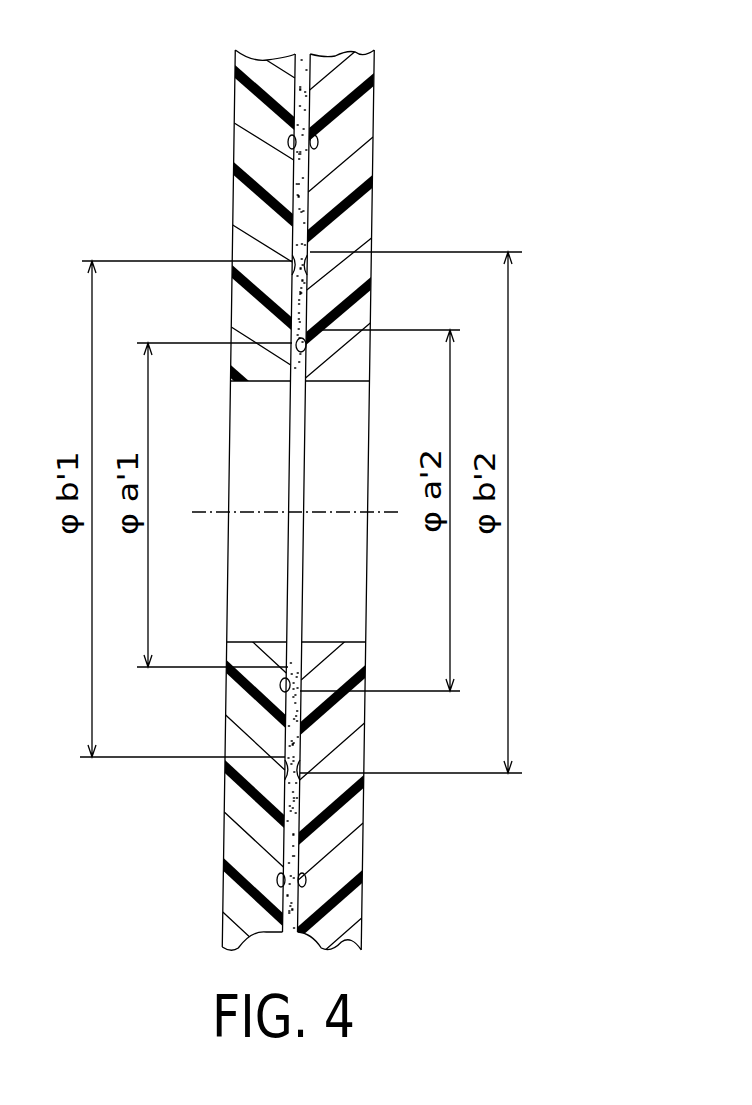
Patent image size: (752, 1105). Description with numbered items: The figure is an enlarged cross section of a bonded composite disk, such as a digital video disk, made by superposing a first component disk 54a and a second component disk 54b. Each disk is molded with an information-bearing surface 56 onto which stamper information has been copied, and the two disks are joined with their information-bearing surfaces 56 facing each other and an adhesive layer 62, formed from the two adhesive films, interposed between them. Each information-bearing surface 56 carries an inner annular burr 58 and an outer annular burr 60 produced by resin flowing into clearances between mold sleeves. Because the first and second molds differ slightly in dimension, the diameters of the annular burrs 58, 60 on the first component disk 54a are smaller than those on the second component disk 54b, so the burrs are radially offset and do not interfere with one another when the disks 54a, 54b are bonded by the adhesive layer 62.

The first component disk 54a is at (392, 121).
The second component disk 54b is at (216, 101).
The information-bearing surface 56 is at (291, 164).
The annular burr 58 is at (311, 348).
The annular burr 60 is at (312, 279).
The adhesive layer 62 is at (303, 57).